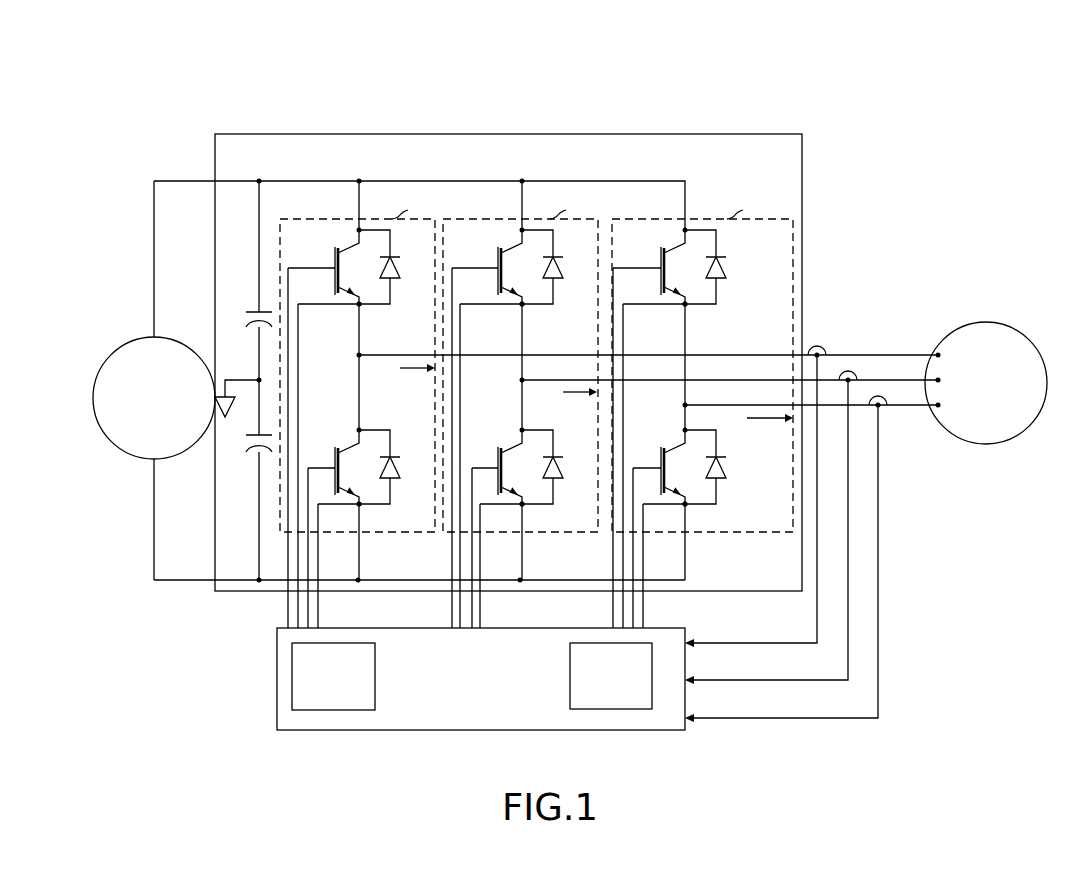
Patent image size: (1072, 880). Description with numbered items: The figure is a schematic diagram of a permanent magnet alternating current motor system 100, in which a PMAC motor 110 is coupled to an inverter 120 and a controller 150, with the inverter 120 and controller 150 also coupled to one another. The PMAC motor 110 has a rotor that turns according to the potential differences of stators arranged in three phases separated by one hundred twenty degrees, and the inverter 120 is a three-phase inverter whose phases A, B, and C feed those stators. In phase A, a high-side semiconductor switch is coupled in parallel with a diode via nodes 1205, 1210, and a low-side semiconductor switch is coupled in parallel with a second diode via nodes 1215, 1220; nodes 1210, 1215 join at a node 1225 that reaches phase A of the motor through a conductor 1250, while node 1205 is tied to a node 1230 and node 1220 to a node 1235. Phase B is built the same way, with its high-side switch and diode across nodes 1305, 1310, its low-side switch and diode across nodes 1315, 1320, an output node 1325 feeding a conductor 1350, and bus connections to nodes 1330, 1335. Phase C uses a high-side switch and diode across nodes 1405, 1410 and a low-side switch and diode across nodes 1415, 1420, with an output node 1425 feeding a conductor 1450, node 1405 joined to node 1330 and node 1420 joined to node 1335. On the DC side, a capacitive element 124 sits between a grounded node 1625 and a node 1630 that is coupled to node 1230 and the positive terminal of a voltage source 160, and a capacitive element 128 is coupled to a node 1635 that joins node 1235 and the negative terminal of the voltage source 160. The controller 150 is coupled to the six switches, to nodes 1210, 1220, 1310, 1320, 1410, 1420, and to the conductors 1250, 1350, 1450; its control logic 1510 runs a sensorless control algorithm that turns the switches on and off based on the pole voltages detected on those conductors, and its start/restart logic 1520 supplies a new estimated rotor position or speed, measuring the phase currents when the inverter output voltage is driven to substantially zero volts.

The PMAC motor system 100 is at (98, 130).
The PMAC motor 110 is at (985, 322).
The inverter 120 is at (766, 134).
The capacitive element 124 is at (255, 308).
The capacitive element 128 is at (255, 450).
The controller 150 is at (481, 679).
The voltage source 160 is at (120, 347).
The node 1205 is at (359, 230).
The node 1210 is at (359, 304).
The node 1215 is at (359, 430).
The node 1220 is at (359, 504).
The node 1225 is at (359, 355).
The node 1230 is at (359, 181).
The node 1235 is at (358, 580).
The conductor 1250 is at (850, 355).
The node 1305 is at (522, 230).
The node 1310 is at (522, 304).
The node 1315 is at (522, 430).
The node 1320 is at (522, 504).
The node 1325 is at (522, 380).
The node 1330 is at (522, 181).
The node 1335 is at (520, 580).
The conductor 1350 is at (897, 380).
The node 1405 is at (685, 230).
The node 1410 is at (685, 304).
The node 1415 is at (685, 430).
The node 1420 is at (685, 504).
The node 1425 is at (685, 405).
The conductor 1450 is at (905, 405).
The control logic 1510 is at (611, 676).
The start/restart logic 1520 is at (333, 676).
The node 1625 is at (259, 380).
The node 1630 is at (259, 181).
The node 1635 is at (259, 580).